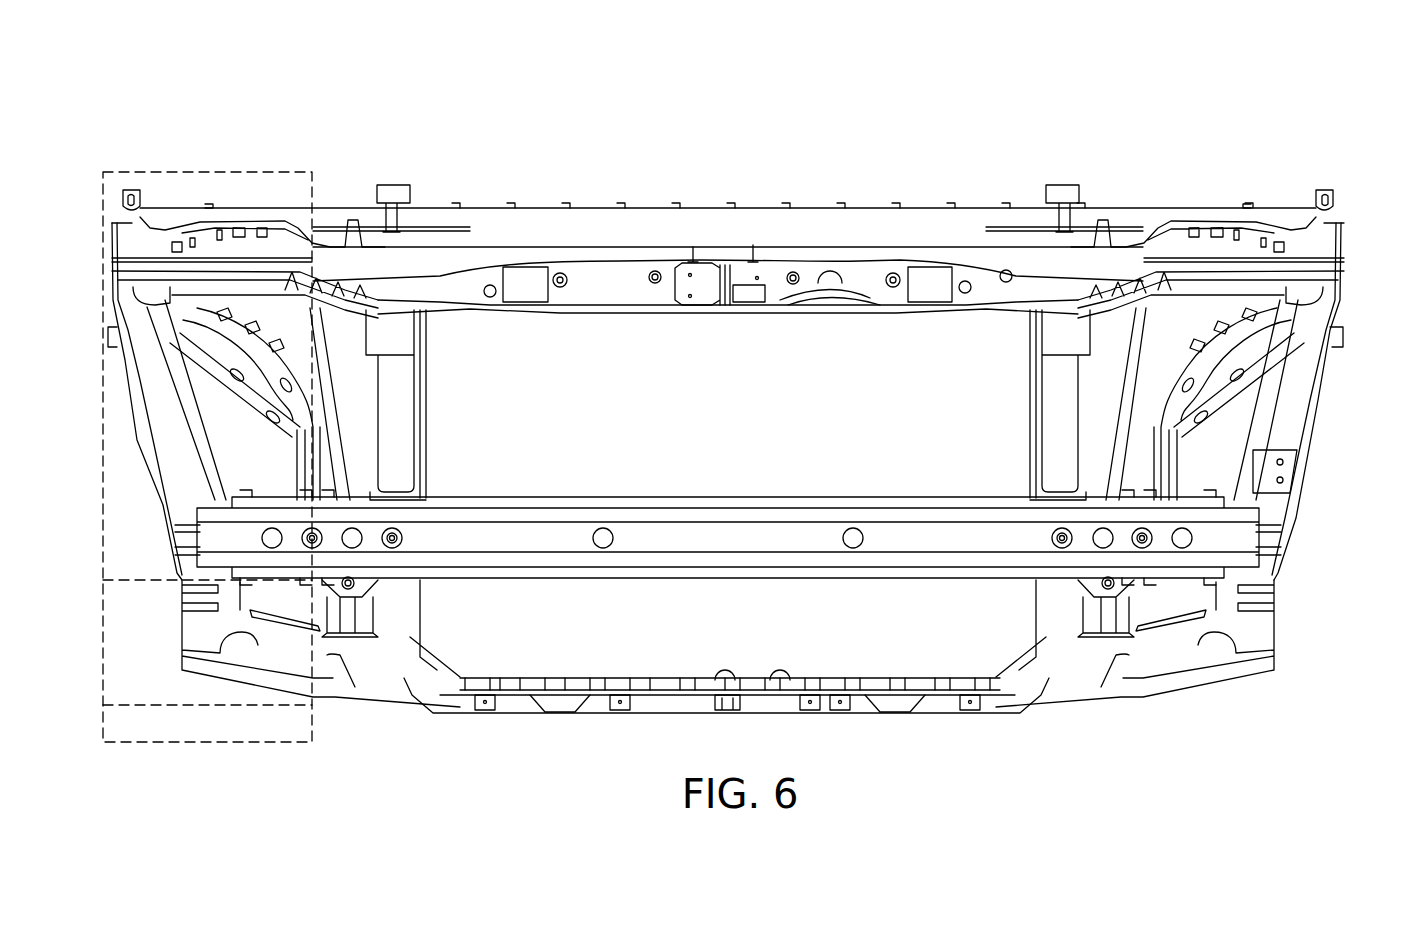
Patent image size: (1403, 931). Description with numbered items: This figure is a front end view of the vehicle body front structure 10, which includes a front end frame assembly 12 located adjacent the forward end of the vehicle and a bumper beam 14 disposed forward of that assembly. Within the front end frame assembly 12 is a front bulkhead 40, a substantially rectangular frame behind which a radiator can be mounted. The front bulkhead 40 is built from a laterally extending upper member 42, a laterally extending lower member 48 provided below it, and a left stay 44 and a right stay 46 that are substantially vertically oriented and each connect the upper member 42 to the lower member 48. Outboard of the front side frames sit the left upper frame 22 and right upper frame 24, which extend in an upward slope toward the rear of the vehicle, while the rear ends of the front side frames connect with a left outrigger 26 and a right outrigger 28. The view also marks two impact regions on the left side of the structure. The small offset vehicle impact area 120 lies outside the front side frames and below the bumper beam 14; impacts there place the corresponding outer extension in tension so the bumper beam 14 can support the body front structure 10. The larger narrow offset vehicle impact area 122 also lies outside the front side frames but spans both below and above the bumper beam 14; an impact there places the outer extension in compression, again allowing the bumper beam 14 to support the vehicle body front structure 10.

The vehicle body front structure 10 is at (1278, 134).
The front end frame assembly 12 is at (1003, 192).
The bumper beam 14 is at (763, 515).
The left upper frame 22 is at (1305, 392).
The right upper frame 24 is at (157, 487).
The left outrigger 26 is at (1270, 352).
The right outrigger 28 is at (200, 377).
The front bulkhead 40 is at (850, 240).
The upper member 42 is at (640, 278).
The left stay 44 is at (1040, 418).
The right stay 46 is at (413, 443).
The lower member 48 is at (525, 706).
The small offset vehicle impact area 120 is at (318, 710).
The narrow offset vehicle impact area 122 is at (272, 744).